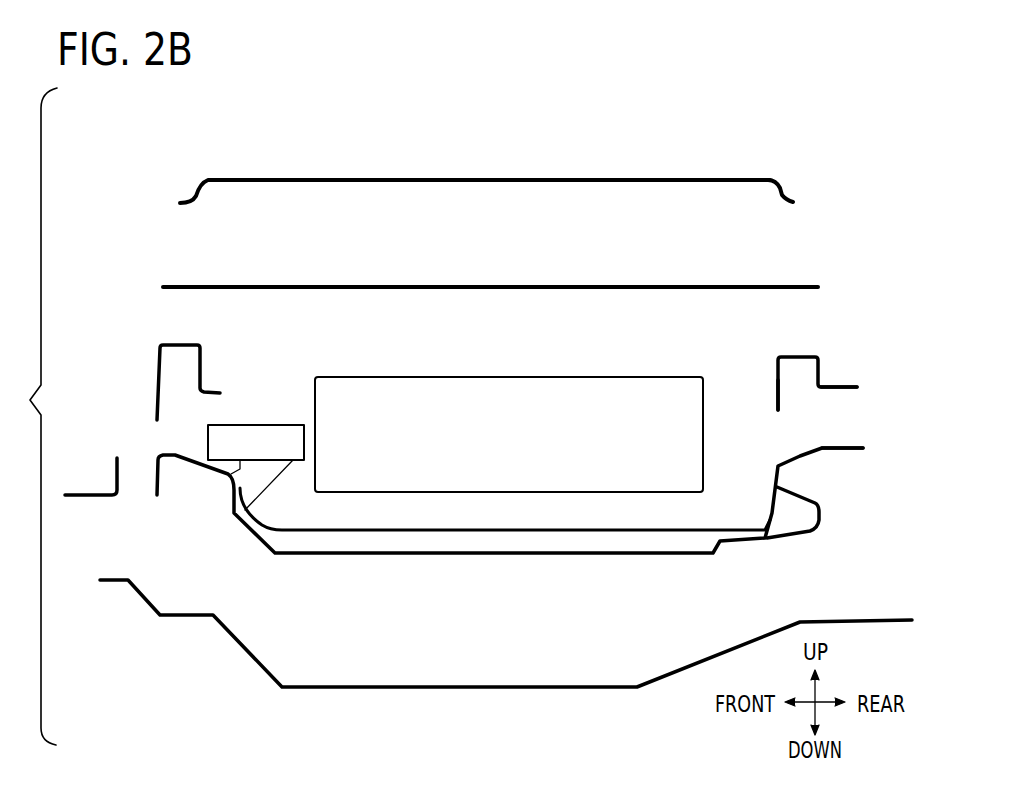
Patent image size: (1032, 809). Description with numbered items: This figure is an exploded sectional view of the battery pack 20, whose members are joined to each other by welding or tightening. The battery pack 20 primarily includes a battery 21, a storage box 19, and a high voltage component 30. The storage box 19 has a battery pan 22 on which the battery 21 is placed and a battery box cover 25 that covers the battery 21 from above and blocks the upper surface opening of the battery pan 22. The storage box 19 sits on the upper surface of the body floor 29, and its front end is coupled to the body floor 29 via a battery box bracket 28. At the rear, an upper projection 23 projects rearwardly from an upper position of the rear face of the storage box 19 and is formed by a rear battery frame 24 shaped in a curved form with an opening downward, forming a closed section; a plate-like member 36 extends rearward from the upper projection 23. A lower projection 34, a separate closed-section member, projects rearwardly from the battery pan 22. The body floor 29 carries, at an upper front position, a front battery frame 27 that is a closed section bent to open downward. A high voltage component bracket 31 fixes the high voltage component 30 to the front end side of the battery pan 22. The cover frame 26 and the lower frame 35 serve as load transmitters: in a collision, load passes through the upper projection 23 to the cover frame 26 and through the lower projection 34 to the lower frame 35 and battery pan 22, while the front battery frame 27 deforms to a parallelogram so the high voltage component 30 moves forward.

The storage box 19 is at (366, 150).
The battery pack 20 is at (468, 126).
The battery 21 is at (515, 375).
The battery pan 22 is at (545, 556).
The upper projection 23 is at (792, 383).
The rear battery frame 24 is at (843, 384).
The battery box cover 25 is at (632, 178).
The cover frame 26 is at (562, 284).
The front battery frame 27 is at (158, 360).
The battery box bracket 28 is at (85, 492).
The body floor 29 is at (675, 668).
The high voltage component 30 is at (270, 425).
The high voltage component bracket 31 is at (278, 478).
The lower projection 34 is at (825, 507).
The lower frame 35 is at (455, 533).
The plate-like member 36 is at (857, 387).